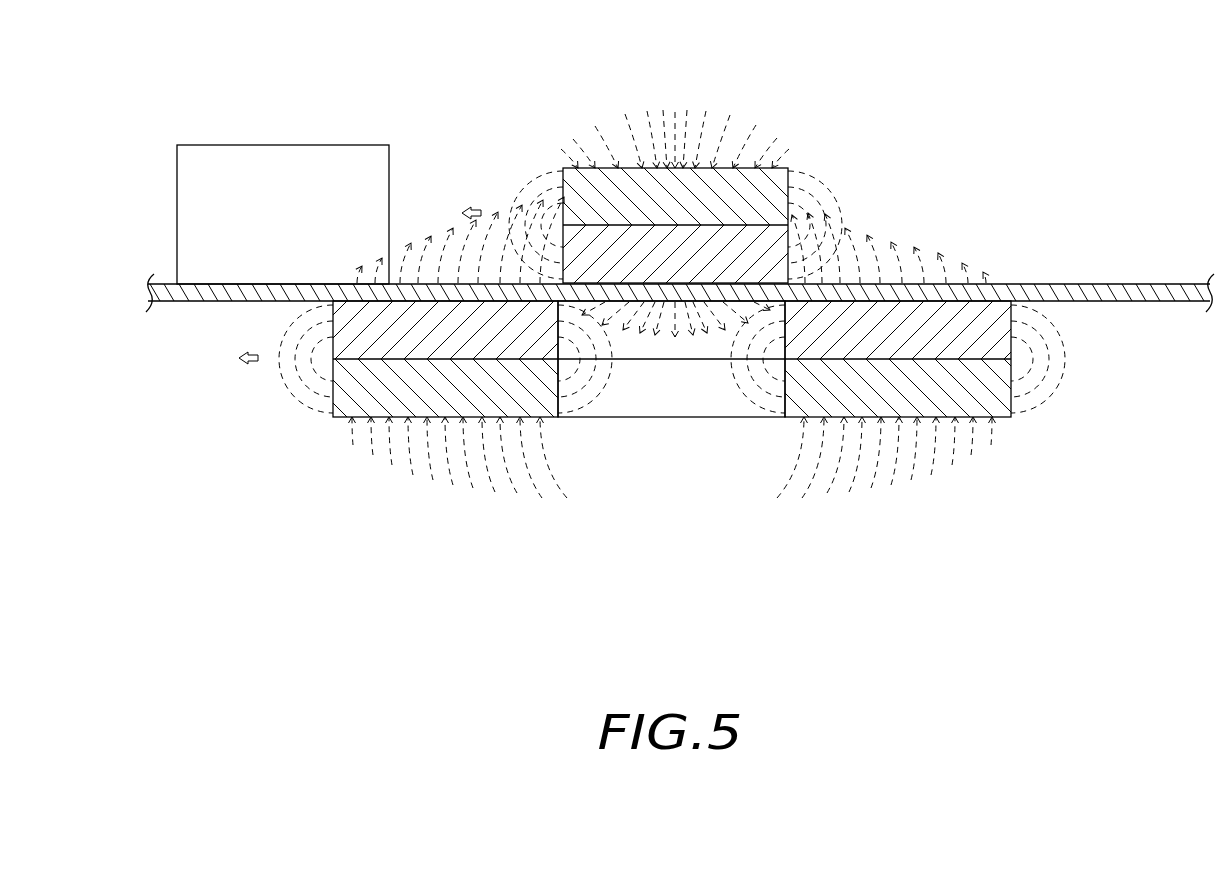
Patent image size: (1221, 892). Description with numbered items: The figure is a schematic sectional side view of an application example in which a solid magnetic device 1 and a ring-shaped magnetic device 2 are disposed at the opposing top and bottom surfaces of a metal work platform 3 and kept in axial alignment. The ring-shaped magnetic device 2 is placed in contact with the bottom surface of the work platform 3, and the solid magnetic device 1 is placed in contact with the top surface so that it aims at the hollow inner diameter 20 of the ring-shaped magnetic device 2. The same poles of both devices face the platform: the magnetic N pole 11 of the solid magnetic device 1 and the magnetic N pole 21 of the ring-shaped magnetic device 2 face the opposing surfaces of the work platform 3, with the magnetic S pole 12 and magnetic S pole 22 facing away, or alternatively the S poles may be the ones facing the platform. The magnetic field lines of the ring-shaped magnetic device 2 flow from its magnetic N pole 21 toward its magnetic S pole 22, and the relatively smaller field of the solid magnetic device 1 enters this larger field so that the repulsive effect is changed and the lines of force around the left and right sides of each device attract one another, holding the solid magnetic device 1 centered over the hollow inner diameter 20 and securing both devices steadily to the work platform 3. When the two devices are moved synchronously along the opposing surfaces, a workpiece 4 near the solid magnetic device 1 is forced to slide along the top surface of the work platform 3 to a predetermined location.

The solid magnetic device 1 is at (734, 156).
The magnetic N pole 11 is at (775, 252).
The magnetic S pole 12 is at (765, 188).
The ring-shaped magnetic device 2 is at (763, 375).
The magnetic N pole 21 is at (1007, 316).
The magnetic S pole 22 is at (1007, 414).
The hollow inner diameter 20 is at (684, 387).
The work platform 3 is at (1112, 292).
The workpiece 4 is at (277, 158).